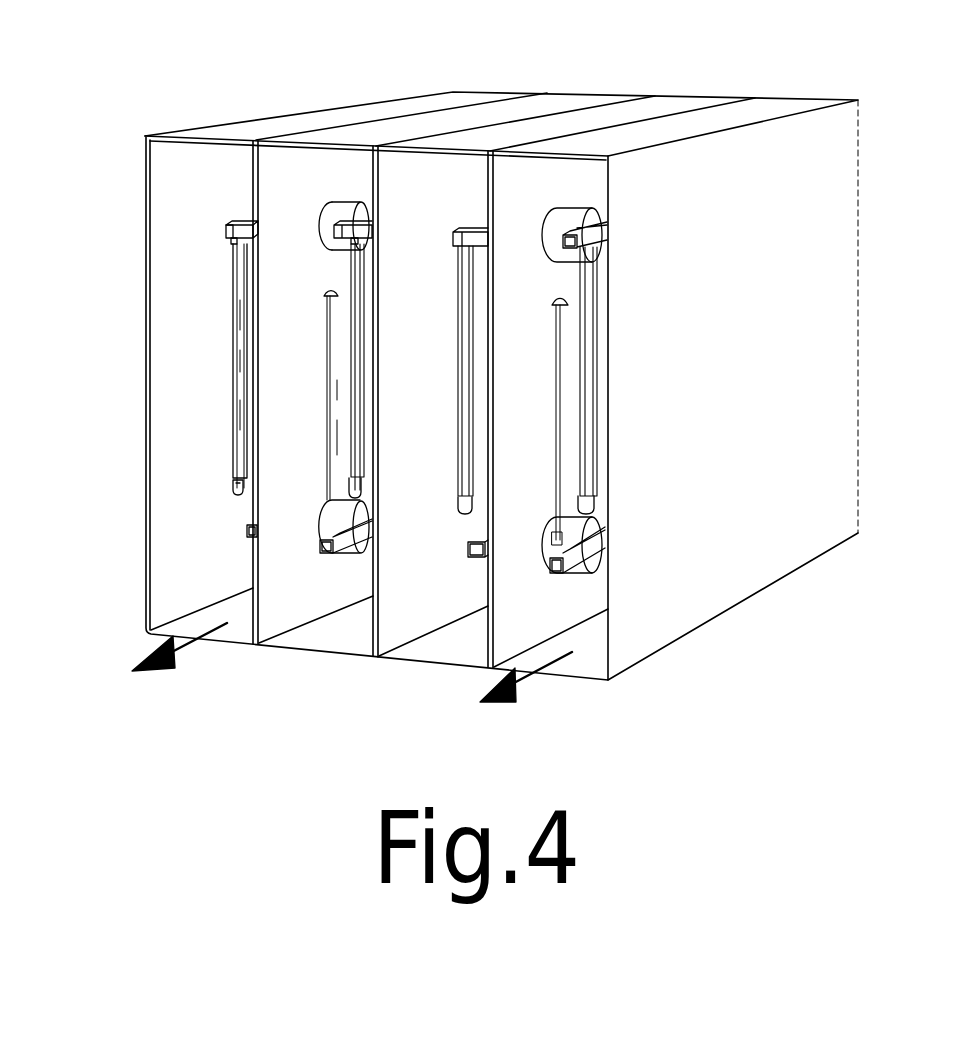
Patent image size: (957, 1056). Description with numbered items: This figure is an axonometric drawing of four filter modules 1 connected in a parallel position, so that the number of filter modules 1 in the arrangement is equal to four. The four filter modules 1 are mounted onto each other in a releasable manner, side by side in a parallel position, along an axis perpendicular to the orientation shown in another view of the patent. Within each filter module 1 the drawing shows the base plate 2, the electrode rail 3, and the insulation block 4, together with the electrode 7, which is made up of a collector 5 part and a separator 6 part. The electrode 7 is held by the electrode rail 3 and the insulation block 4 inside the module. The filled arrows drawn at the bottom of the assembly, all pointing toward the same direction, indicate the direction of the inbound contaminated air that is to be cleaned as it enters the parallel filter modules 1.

The filter module 1 is at (740, 117).
The base plate 2 is at (300, 596).
The electrode rail 3 is at (240, 230).
The insulation block 4 is at (335, 208).
The collector 5 is at (240, 368).
The separator 6 is at (235, 422).
The electrode 7 is at (240, 498).